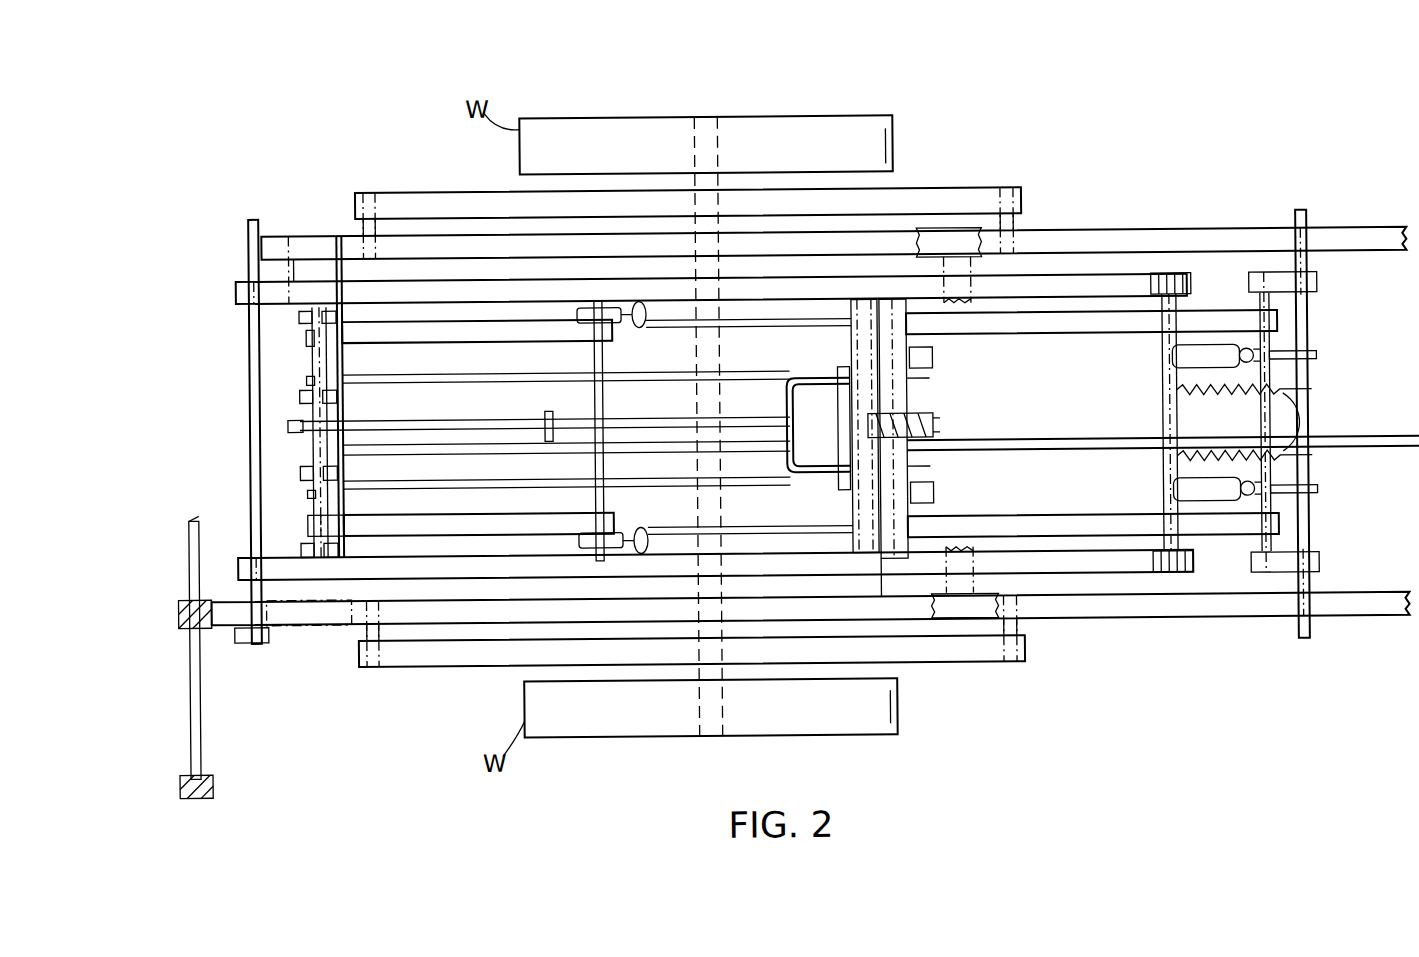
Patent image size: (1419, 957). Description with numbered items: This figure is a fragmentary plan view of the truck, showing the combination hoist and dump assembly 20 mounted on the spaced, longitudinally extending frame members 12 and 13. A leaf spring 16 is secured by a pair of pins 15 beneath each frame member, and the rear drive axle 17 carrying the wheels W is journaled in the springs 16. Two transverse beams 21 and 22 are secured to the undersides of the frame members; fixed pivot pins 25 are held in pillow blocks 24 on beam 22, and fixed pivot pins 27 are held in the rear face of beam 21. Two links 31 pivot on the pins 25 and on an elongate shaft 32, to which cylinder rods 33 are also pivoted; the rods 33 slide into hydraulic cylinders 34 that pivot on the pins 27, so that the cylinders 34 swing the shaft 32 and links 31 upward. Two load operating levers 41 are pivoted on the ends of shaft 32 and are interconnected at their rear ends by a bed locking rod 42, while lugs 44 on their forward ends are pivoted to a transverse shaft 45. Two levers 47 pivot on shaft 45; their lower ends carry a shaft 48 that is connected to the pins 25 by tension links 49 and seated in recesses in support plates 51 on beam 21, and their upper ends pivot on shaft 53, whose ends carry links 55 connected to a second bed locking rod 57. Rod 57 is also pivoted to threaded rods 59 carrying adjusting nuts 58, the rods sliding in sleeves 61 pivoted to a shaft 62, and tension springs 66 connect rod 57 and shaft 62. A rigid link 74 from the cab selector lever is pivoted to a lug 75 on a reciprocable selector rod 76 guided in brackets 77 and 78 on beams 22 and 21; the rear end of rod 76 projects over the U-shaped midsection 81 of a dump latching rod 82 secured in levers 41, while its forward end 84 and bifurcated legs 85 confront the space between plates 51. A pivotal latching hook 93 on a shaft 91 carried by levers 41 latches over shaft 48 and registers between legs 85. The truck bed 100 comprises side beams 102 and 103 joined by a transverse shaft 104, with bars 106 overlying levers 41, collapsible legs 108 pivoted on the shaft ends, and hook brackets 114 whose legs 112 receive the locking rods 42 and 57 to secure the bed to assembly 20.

The frame member 12 is at (1112, 608).
The frame member 13 is at (1107, 233).
The pins 15 is at (365, 226).
The suspension member or leaf spring 16 is at (428, 190).
The rear drive axle 17 is at (697, 712).
The combination hoist and dump assembly 20 is at (1128, 300).
The beam 21 is at (880, 578).
The beam 22 is at (283, 262).
The pillow blocks 24 is at (300, 314).
The pivot pins 25 is at (307, 357).
The pivot pins 27 is at (852, 528).
The links 31 is at (465, 340).
The rod or shaft 32 is at (595, 392).
The cylinder rods 33 is at (640, 328).
The hydraulic cylinders 34 is at (678, 327).
The load operating levers 41 is at (237, 292).
The bed locking rod 42 is at (250, 503).
The lugs 44 is at (1185, 277).
The shaft 45 is at (1163, 392).
The levers 47 is at (1110, 320).
The rod or shaft 48 is at (925, 390).
The tension links 49 is at (455, 380).
The support plates 51 is at (933, 358).
The shaft 53 is at (1265, 385).
The links 55 is at (1318, 288).
The bed locking rod 57 is at (1297, 218).
The adjusting nuts 58 is at (1261, 345).
The externally-threaded rods 59 is at (1285, 356).
The sleeves 61 is at (1205, 349).
The shaft 62 is at (1240, 362).
The tension springs 66 is at (1297, 412).
The rigid link 74 is at (1085, 442).
The lug 75 is at (545, 420).
The selector rod 76 is at (645, 418).
The guide bracket 77 is at (343, 448).
The guide bracket 78 is at (840, 372).
The U-shaped midsection 81 is at (313, 417).
The dump latching rod 82 is at (343, 385).
The forward end of selector rod 84 is at (908, 420).
The legs 85 is at (810, 379).
The rod or shaft 91 is at (907, 540).
The latching hook 93 is at (940, 430).
The truck bed 100 is at (173, 645).
The side beam 102 is at (985, 620).
The side beam 103 is at (940, 233).
The shaft 104 is at (188, 545).
The bars 106 is at (972, 290).
The collapsible legs 108 is at (177, 788).
The leg 112 is at (268, 628).
The hook member or bracket 114 is at (243, 639).